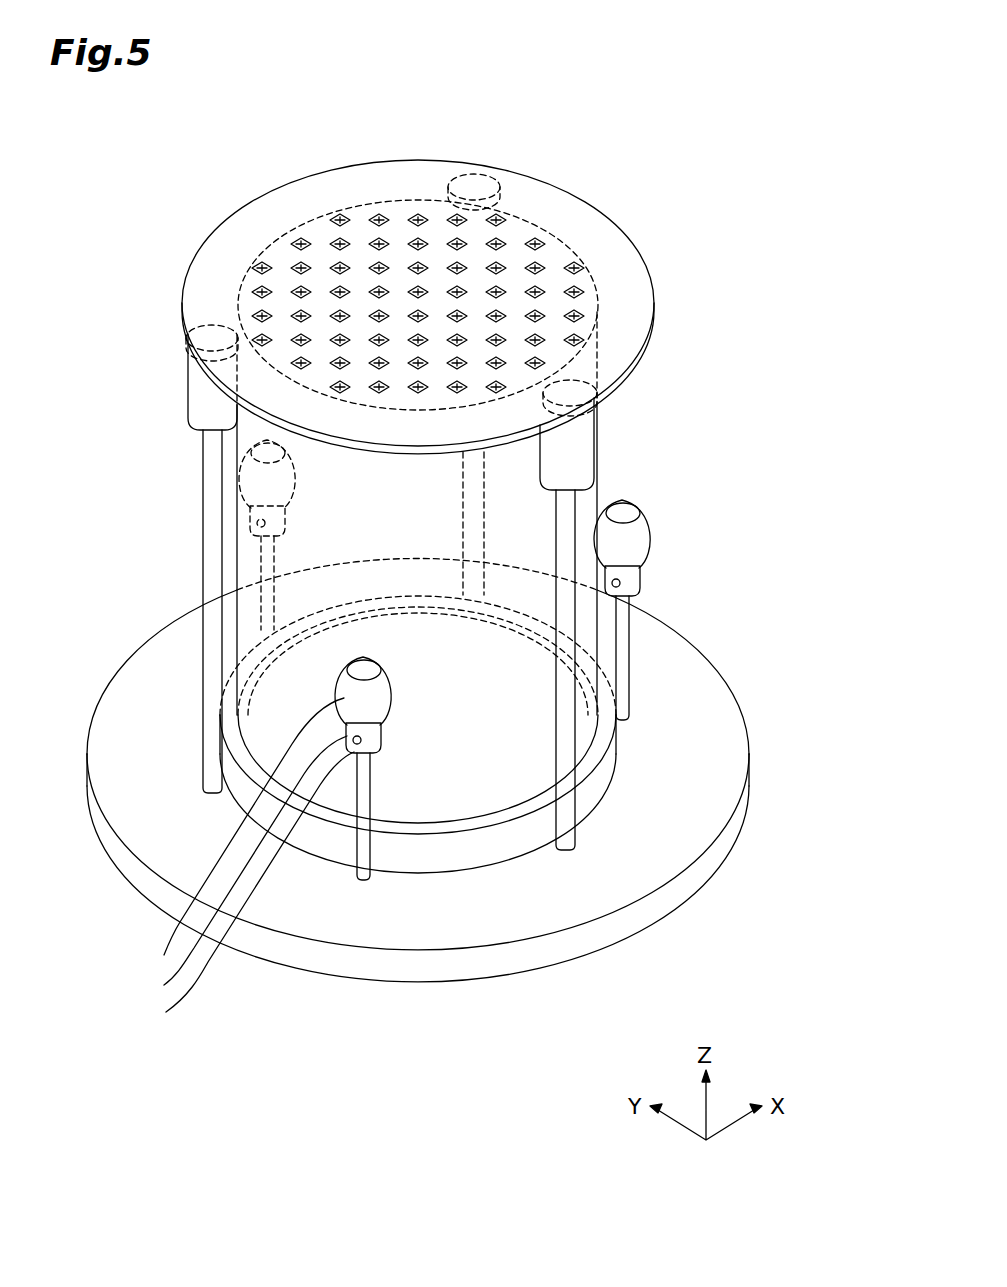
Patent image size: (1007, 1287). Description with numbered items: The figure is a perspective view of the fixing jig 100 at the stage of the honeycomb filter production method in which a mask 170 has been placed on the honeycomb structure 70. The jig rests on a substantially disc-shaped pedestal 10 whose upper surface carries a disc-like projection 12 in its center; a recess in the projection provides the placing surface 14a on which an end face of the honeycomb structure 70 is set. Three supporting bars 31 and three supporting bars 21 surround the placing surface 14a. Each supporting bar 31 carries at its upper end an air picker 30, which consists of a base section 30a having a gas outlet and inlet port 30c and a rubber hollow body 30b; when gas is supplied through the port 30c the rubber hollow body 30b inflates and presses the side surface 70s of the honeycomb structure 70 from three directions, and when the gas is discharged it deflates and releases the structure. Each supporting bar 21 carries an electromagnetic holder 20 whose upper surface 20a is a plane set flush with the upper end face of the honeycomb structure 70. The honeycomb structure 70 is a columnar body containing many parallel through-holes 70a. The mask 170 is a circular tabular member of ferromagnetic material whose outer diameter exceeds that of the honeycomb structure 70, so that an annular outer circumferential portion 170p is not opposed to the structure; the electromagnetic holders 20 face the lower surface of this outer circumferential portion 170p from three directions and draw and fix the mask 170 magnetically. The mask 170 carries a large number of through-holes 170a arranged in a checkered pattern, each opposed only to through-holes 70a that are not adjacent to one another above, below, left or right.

The pedestal 10 is at (633, 885).
The projection 12 is at (607, 767).
The placing surface 14a is at (447, 787).
The electromagnetic holder 20 is at (198, 396).
The upper surface 20a is at (498, 172).
The supporting bar 21 is at (570, 735).
The air picker 30 is at (295, 471).
The base section 30a is at (233, 867).
The rubber hollow body 30b is at (232, 833).
The gas outlet and inlet port 30c is at (237, 889).
The supporting bar 31 is at (280, 565).
The honeycomb structure 70 is at (575, 240).
The through-hole 70a is at (377, 218).
The side surface 70s is at (250, 412).
The fixing jig 100 is at (167, 508).
The mask 170 is at (556, 208).
The through-hole 170a is at (380, 218).
The outer circumferential portion 170p is at (283, 205).